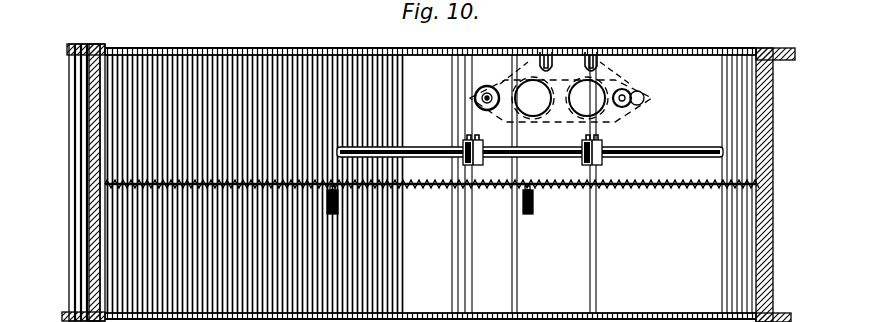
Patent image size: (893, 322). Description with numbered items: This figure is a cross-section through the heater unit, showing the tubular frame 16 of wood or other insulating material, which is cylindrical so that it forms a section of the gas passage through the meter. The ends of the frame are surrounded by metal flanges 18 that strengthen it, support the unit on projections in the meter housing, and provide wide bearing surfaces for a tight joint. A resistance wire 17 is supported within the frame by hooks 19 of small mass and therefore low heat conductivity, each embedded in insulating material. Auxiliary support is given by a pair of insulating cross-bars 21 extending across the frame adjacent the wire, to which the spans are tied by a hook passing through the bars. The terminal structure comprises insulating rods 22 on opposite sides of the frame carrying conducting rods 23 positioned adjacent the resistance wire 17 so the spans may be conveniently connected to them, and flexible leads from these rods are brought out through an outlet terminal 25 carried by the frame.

The tubular frame 16 is at (92, 129).
The resistance wire 17 is at (309, 47).
The metal flanges 18 is at (78, 44).
The hooks 19 is at (752, 190).
The cross-bars 21 is at (339, 203).
The insulating rods 22 is at (693, 148).
The conducting rods 23 is at (512, 146).
The outlet terminal 25 is at (515, 80).